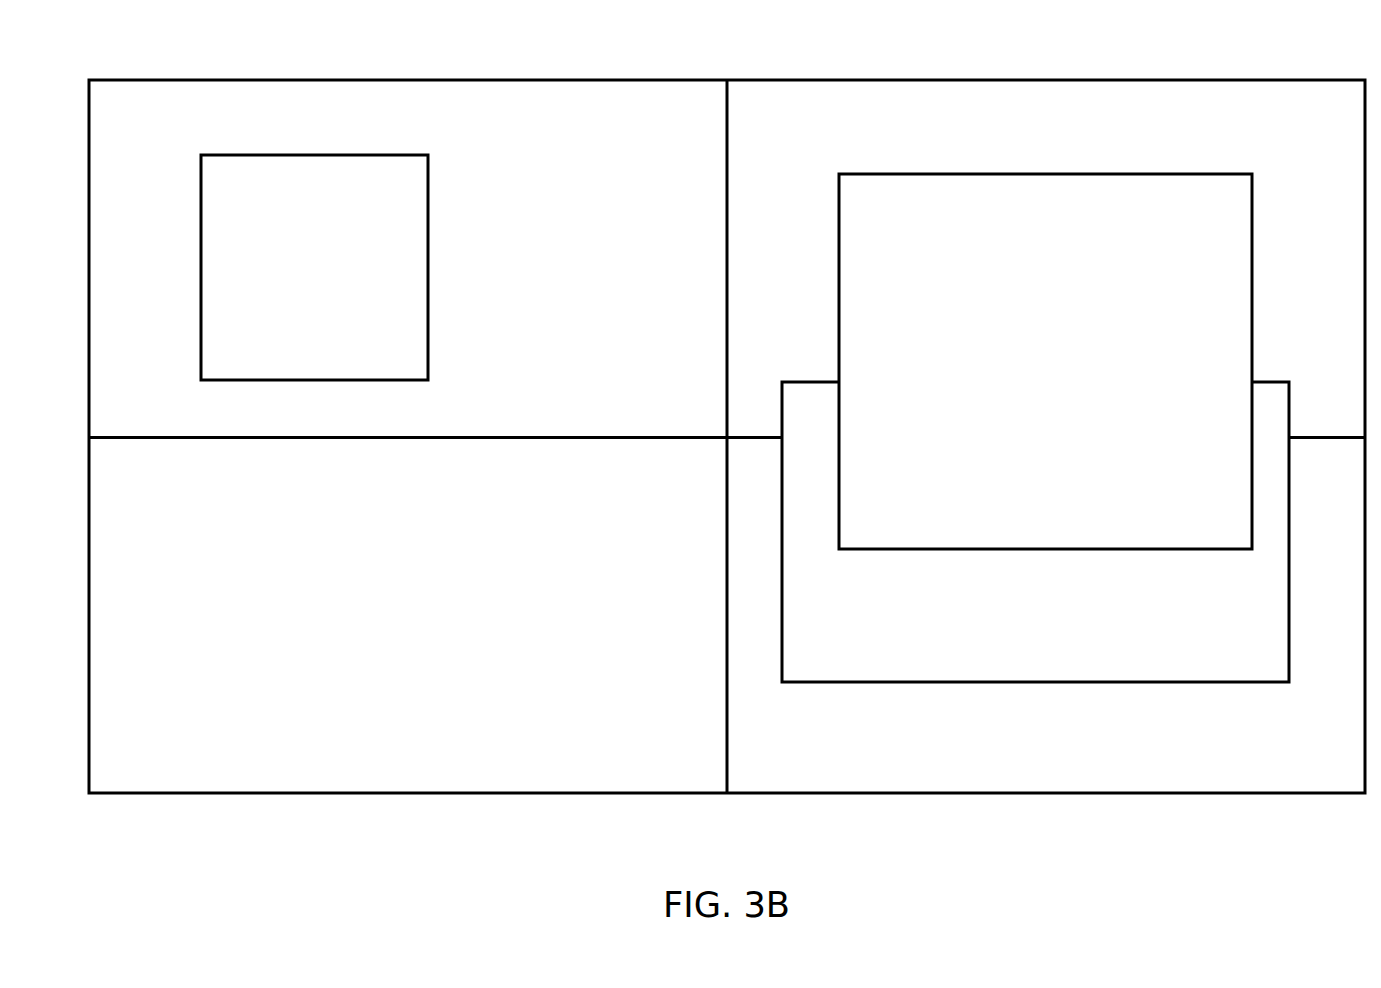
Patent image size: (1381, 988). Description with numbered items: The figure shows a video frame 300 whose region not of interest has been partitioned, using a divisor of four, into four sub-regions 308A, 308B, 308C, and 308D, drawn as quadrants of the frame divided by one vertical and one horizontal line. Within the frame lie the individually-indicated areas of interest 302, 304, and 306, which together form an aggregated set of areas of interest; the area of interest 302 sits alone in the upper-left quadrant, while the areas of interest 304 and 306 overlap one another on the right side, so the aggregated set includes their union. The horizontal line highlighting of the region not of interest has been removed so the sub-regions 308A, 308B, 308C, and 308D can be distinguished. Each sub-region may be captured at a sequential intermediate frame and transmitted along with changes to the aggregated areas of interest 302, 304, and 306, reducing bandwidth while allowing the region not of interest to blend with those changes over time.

The video frame 300 is at (148, 37).
The individually-indicated area of interest 302 is at (335, 280).
The individually-indicated area of interest 304 is at (1053, 619).
The individually-indicated area of interest 306 is at (1068, 375).
The sub-region 308A is at (577, 230).
The sub-region 308B is at (772, 230).
The sub-region 308C is at (445, 663).
The sub-region 308D is at (970, 745).